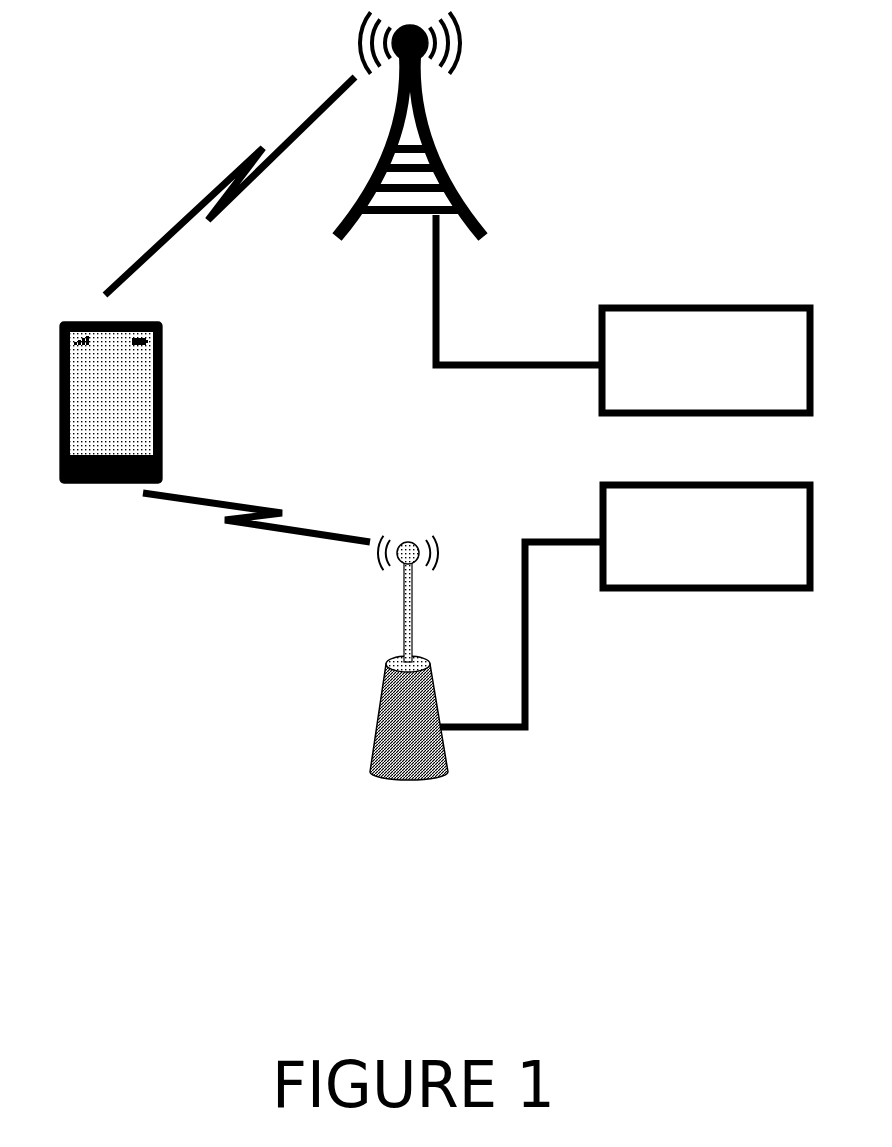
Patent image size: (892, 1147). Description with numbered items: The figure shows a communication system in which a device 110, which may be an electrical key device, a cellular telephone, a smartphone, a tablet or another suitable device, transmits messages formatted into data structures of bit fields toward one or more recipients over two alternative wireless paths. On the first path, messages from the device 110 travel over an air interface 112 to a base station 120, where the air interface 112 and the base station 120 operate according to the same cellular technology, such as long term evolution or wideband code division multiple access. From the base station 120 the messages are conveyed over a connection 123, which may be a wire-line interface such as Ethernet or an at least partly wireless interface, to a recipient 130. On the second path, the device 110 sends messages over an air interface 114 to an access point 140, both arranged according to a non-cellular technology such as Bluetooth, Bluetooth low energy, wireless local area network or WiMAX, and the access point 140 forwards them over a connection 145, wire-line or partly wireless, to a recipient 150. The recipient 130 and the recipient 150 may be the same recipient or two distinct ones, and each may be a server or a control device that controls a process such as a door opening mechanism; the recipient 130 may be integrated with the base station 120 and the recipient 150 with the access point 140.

The device 110 is at (90, 485).
The air interface 112 is at (233, 168).
The air interface 114 is at (237, 528).
The base station 120 is at (447, 150).
The connection 123 is at (519, 365).
The recipient 130 is at (732, 378).
The access point 140 is at (405, 785).
The connection 145 is at (526, 676).
The recipient 150 is at (733, 551).